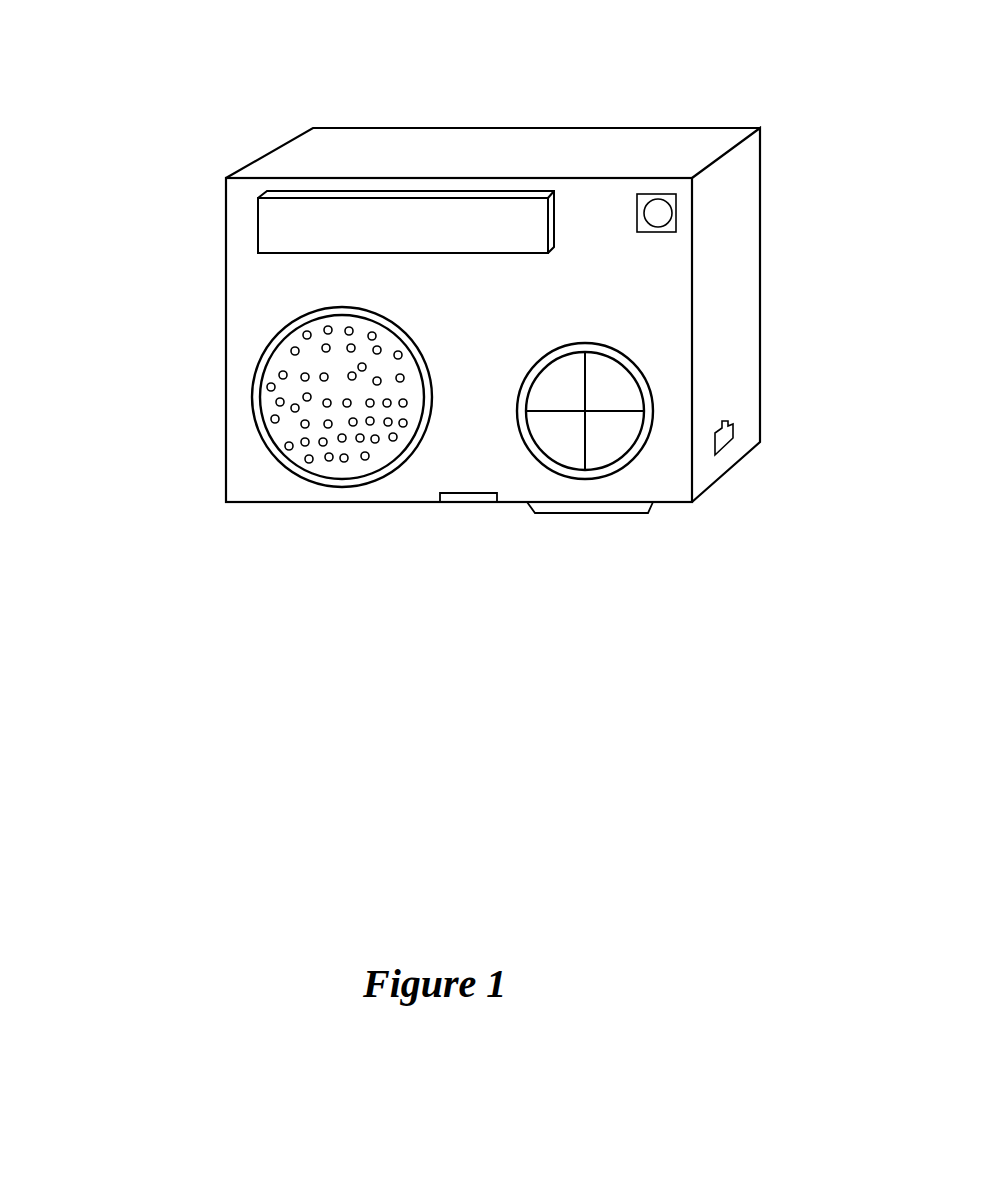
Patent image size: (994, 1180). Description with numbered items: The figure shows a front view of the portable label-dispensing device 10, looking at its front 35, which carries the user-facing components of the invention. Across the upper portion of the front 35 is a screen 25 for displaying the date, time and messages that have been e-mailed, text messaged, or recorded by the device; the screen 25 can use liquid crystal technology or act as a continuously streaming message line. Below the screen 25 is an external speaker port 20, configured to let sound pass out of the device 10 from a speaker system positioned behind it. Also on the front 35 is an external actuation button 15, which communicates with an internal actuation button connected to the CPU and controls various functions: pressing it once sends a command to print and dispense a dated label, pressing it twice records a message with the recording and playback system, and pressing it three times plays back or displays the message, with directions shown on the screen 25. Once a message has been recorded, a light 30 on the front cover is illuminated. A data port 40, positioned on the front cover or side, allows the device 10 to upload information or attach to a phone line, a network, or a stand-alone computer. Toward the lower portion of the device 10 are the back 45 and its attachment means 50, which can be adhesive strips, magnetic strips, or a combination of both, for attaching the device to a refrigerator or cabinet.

The portable label-dispensing device 10 is at (192, 199).
The external actuation button 15 is at (638, 453).
The external speaker port 20 is at (277, 432).
The screen 25 is at (505, 212).
The light 30 is at (657, 215).
The front 35 is at (683, 187).
The data port 40 is at (727, 440).
The back 45 is at (478, 497).
The attachment means 50 is at (607, 508).